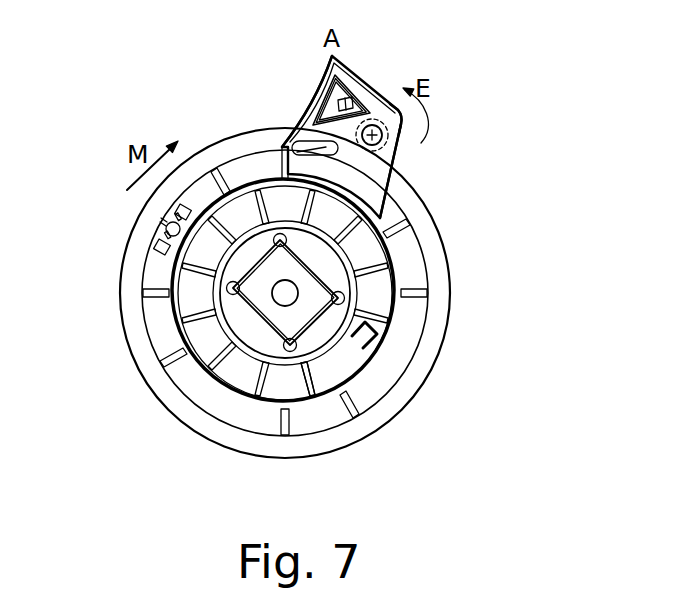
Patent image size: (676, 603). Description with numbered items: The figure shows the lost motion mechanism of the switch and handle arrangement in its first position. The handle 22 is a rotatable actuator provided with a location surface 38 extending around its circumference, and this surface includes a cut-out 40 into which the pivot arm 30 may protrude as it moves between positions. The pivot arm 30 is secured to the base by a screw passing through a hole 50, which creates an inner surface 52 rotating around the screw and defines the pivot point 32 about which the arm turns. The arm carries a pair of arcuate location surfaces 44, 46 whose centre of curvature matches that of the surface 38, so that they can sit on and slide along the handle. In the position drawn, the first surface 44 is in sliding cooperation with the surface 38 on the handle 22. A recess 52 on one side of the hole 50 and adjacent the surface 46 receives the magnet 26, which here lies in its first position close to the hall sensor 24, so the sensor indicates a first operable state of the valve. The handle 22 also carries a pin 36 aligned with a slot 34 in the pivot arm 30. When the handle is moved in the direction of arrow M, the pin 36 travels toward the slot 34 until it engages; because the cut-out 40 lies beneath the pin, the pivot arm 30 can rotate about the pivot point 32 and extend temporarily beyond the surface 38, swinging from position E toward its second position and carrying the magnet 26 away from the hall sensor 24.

The handle 22 is at (452, 267).
The hall sensor 24 is at (363, 85).
The magnet 26 is at (368, 88).
The pivot arm 30 is at (377, 170).
The pivot point 32 is at (374, 133).
The slot 34 is at (280, 153).
The pin 36 is at (160, 218).
The location surface 38 is at (403, 320).
The cut-out 40 is at (177, 272).
The first location surface 44 is at (383, 212).
The second location surface 46 is at (320, 95).
The hole 50 is at (403, 118).
The recess 52 is at (355, 82).